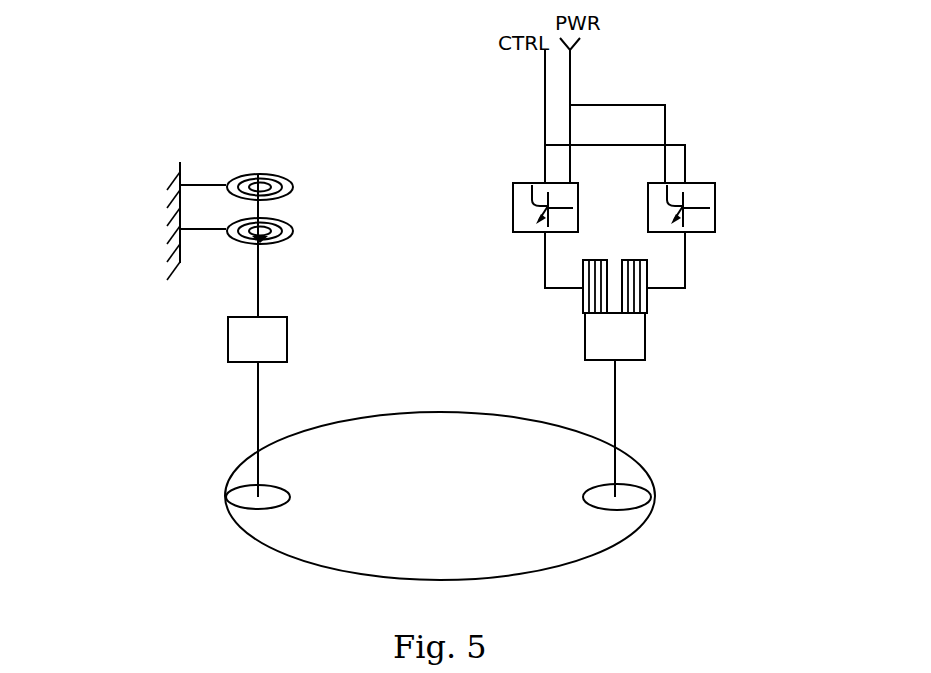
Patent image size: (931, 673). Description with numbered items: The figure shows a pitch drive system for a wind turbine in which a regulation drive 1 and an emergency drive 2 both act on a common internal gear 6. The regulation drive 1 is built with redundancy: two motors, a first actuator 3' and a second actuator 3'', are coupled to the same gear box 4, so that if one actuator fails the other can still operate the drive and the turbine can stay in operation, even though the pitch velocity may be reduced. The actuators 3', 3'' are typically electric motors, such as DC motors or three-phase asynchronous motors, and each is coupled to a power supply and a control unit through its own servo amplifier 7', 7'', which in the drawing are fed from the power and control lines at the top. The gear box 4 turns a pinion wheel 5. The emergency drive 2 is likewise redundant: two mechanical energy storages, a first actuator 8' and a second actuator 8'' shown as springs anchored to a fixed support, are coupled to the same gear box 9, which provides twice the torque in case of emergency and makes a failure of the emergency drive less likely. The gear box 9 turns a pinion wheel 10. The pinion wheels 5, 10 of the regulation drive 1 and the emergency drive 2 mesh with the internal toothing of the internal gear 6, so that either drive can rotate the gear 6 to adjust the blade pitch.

The regulation drive 1 is at (800, 391).
The emergency drive 2 is at (92, 397).
The first actuator 3' is at (675, 286).
The second actuator 3'' is at (553, 286).
The gear box 4 is at (645, 337).
The pinion wheel 5 is at (642, 487).
The internal gear 6 is at (597, 547).
The servo amplifier 7' is at (722, 206).
The servo amplifier 7'' is at (507, 206).
The first actuator 8' is at (294, 227).
The second actuator 8'' is at (297, 181).
The gear box 9 is at (228, 340).
The pinion wheel 10 is at (227, 485).